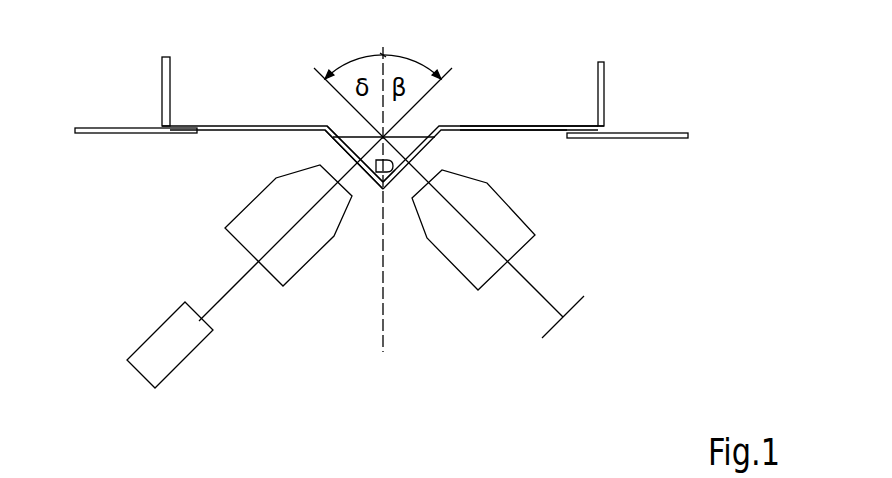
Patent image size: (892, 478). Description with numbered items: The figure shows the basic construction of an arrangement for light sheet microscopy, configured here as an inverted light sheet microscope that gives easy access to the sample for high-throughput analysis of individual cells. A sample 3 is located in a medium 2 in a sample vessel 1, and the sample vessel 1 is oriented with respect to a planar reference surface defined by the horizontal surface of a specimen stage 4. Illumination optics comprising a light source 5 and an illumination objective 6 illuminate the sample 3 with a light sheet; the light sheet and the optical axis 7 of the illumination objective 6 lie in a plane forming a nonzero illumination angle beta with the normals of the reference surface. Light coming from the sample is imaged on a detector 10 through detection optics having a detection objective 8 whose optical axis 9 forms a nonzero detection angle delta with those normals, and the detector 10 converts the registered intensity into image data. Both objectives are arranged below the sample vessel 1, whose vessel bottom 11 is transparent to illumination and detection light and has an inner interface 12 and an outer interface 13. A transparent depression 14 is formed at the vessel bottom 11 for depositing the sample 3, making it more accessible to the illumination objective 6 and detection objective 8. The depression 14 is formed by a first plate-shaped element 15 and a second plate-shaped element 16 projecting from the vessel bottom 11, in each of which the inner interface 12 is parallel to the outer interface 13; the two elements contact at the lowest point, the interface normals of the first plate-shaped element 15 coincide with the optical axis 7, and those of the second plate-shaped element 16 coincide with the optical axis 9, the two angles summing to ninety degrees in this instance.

The sample vessel 1 is at (162, 80).
The medium 2 is at (438, 127).
The sample 3 is at (350, 157).
The specimen stage 4 is at (120, 133).
The light source 5 is at (142, 357).
The illumination objective 6 is at (283, 270).
The optical axis of the illumination objective 7 is at (228, 292).
The detection objective 8 is at (477, 275).
The optical axis of the detection objective 9 is at (530, 280).
The detector 10 is at (577, 313).
The vessel bottom 11 is at (510, 127).
The inner interface 12 is at (607, 130).
The outer interface 13 is at (533, 133).
The depression 14 is at (370, 183).
The first plate-shaped element 15 is at (357, 163).
The second plate-shaped element 16 is at (395, 172).